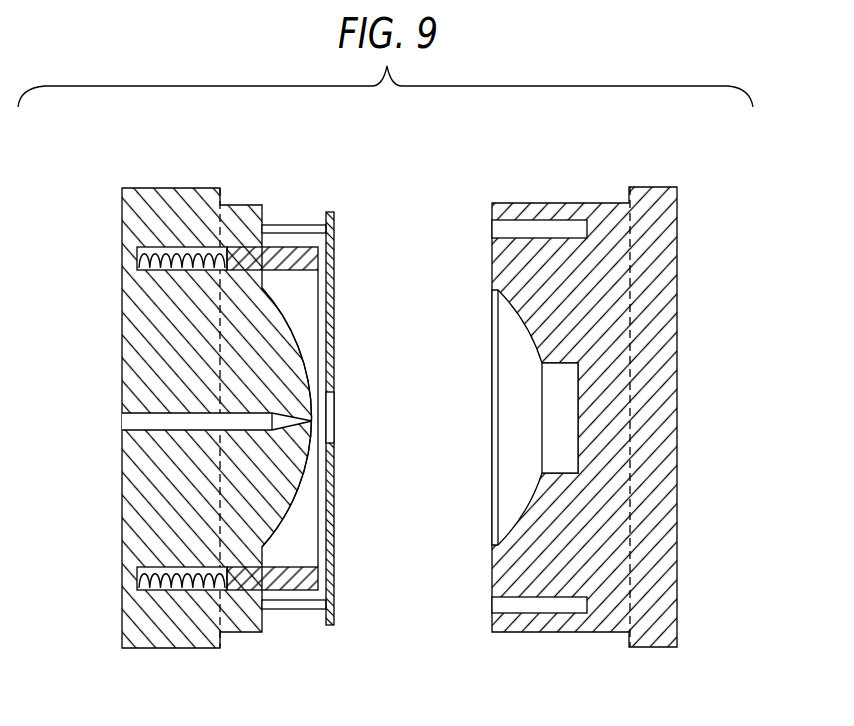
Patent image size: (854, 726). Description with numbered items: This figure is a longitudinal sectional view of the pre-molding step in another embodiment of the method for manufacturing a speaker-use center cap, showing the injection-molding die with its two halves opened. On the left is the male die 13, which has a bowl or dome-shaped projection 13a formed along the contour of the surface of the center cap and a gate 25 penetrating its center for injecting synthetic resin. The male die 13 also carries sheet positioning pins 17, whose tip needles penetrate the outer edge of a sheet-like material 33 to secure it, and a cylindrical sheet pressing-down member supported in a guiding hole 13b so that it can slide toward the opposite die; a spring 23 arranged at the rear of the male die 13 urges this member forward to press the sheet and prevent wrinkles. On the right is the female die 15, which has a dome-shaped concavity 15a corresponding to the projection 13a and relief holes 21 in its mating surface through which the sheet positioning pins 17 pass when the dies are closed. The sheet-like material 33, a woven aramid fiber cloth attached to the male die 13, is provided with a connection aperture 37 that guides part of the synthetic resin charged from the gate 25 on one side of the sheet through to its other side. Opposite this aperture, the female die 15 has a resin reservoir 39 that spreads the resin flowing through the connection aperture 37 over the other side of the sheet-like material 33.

The male die part 13 is at (217, 419).
The dome-shaped projection 13a is at (308, 336).
The guiding hole 13b is at (187, 592).
The female die part 15 is at (586, 390).
The dome-shaped concavity 15a is at (533, 503).
The sheet positioning pins 17 is at (282, 223).
The relief holes 21 is at (538, 218).
The urging means (spring) 23 is at (139, 592).
The gate 25 is at (162, 414).
The sheet-like material 33 is at (367, 418).
The connection aperture 37 is at (335, 415).
The resin reservoir 39 is at (552, 398).